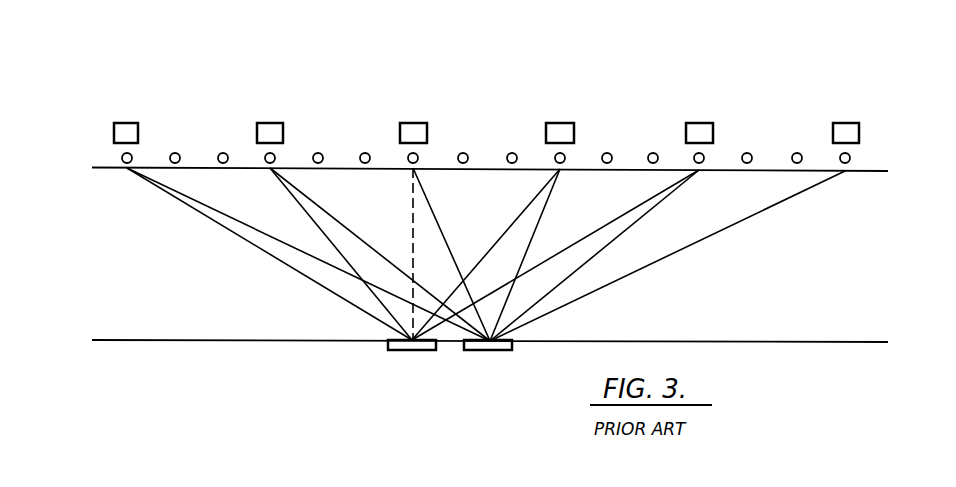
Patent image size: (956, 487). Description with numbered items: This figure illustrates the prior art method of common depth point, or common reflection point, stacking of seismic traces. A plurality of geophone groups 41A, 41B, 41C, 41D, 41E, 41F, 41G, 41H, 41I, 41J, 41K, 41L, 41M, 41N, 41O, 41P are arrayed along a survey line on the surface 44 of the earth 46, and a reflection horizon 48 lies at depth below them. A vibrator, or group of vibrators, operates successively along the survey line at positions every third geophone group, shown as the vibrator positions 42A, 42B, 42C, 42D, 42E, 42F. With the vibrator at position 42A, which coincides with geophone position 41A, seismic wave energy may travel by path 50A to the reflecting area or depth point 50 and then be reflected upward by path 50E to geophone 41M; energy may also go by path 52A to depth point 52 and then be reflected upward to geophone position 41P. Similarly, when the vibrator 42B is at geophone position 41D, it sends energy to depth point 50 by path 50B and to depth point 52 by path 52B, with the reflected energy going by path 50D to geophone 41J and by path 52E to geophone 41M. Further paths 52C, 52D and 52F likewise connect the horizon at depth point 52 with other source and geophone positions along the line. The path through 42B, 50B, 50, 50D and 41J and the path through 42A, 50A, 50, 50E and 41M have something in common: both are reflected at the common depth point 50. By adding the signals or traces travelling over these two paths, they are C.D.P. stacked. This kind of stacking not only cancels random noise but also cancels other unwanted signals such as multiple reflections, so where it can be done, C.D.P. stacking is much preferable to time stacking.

The geophone group 41A is at (132, 156).
The geophone group 41B is at (196, 148).
The geophone group 41C is at (240, 143).
The geophone group 41D is at (275, 156).
The geophone group 41E is at (338, 148).
The geophone group 41F is at (370, 156).
The geophone group 41G is at (418, 156).
The geophone group 41H is at (484, 148).
The geophone group 41I is at (517, 156).
The geophone group 41J is at (565, 156).
The geophone group 41K is at (628, 148).
The geophone group 41L is at (658, 156).
The geophone group 41M is at (704, 156).
The geophone group 41N is at (768, 148).
The geophone group 41O is at (802, 156).
The geophone group 41P is at (850, 156).
The vibrator position 42A is at (127, 123).
The vibrator position 42B is at (272, 123).
The vibrator position 42C is at (415, 123).
The vibrator position 42D is at (563, 123).
The vibrator position 42E is at (698, 123).
The vibrator position 42F is at (848, 123).
The surface 44 is at (246, 170).
The earth 46 is at (143, 258).
The reflection horizon 48 is at (155, 340).
The depth point 50 is at (412, 351).
The depth point 52 is at (490, 351).
The path 50A is at (247, 240).
The path 50B is at (375, 301).
The path 50D is at (517, 218).
The path 50E is at (616, 221).
The path 52A is at (291, 250).
The path 52B is at (350, 230).
The path 52C is at (468, 230).
The path 52D is at (535, 232).
The path 52E is at (633, 228).
The path 52F is at (643, 268).